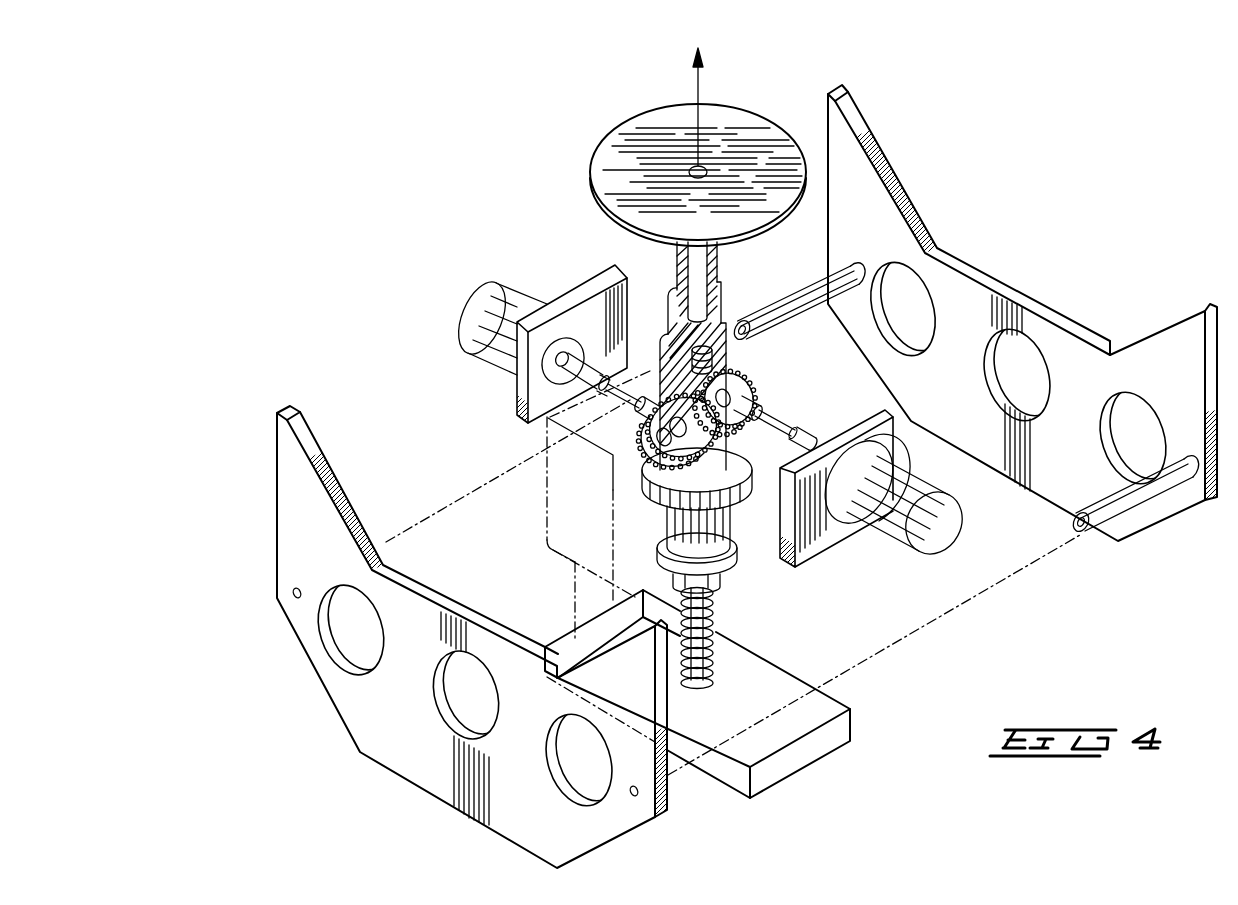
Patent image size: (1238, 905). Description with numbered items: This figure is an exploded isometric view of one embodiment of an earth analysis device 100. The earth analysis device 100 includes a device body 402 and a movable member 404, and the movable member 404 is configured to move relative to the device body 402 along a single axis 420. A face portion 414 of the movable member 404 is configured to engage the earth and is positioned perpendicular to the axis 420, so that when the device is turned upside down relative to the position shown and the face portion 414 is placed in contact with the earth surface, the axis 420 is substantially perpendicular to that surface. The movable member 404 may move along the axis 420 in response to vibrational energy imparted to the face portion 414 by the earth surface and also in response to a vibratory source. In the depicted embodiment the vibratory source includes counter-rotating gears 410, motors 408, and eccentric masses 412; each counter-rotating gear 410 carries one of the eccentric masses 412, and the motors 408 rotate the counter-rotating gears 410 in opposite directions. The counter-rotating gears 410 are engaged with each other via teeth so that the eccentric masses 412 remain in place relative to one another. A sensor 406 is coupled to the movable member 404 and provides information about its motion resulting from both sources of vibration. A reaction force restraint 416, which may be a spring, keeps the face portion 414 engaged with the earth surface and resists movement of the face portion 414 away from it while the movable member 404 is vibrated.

The earth analysis device 100 is at (703, 458).
The device body 402 is at (277, 518).
The movable member 404 is at (718, 272).
The sensor 406 is at (710, 350).
The motor 408 is at (478, 305).
The counter-rotating gear 410 is at (768, 410).
The eccentric mass 412 is at (752, 393).
The face portion 414 is at (622, 155).
The reaction force restraint 416 is at (713, 634).
The axis 420 is at (698, 120).